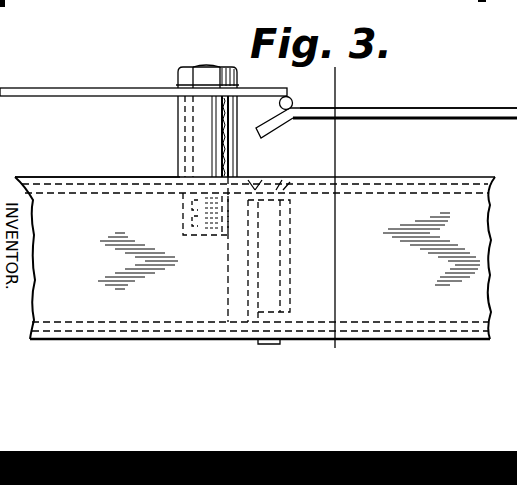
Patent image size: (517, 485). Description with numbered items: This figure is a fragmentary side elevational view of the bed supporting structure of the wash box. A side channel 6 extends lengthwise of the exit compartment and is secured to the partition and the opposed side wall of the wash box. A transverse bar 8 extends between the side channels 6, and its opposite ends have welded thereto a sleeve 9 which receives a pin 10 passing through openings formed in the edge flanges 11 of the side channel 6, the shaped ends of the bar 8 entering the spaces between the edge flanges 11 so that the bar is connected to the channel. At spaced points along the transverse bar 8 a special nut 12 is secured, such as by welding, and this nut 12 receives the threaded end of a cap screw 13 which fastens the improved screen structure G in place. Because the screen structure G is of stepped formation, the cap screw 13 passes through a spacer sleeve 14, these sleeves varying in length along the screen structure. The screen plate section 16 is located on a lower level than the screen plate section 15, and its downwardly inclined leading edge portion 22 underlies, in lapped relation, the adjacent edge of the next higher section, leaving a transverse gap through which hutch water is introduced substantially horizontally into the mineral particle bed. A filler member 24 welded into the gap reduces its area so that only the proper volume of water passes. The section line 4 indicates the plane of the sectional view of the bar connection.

The section line 4- 4 is at (335, 75).
The side channel 6 is at (385, 177).
The transverse bar 8 is at (228, 274).
The sleeve 9 is at (291, 274).
The pin 10 is at (279, 188).
The edge flange 11 is at (82, 178).
The special nut 12 is at (183, 200).
The cap screw 13 is at (178, 72).
The spacer sleeve 14 is at (180, 125).
The screen plate section 15 is at (60, 96).
The screen plate section 16 is at (450, 119).
The leading edge portion 22 is at (269, 136).
The filler member 24 is at (292, 99).
The screen structure G is at (411, 107).